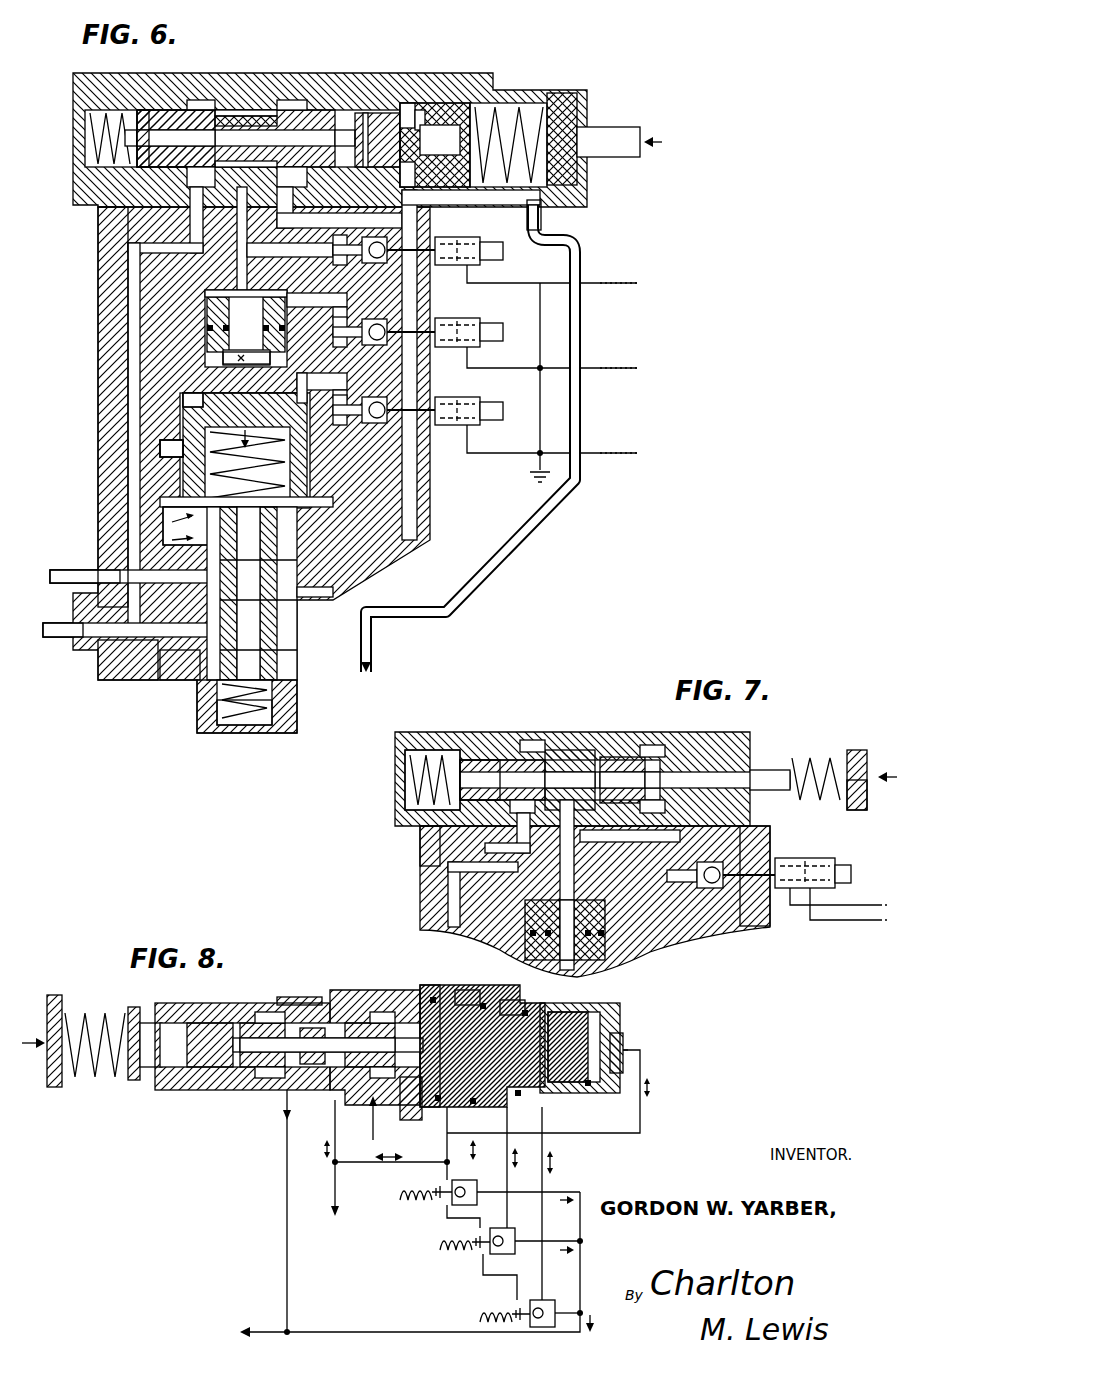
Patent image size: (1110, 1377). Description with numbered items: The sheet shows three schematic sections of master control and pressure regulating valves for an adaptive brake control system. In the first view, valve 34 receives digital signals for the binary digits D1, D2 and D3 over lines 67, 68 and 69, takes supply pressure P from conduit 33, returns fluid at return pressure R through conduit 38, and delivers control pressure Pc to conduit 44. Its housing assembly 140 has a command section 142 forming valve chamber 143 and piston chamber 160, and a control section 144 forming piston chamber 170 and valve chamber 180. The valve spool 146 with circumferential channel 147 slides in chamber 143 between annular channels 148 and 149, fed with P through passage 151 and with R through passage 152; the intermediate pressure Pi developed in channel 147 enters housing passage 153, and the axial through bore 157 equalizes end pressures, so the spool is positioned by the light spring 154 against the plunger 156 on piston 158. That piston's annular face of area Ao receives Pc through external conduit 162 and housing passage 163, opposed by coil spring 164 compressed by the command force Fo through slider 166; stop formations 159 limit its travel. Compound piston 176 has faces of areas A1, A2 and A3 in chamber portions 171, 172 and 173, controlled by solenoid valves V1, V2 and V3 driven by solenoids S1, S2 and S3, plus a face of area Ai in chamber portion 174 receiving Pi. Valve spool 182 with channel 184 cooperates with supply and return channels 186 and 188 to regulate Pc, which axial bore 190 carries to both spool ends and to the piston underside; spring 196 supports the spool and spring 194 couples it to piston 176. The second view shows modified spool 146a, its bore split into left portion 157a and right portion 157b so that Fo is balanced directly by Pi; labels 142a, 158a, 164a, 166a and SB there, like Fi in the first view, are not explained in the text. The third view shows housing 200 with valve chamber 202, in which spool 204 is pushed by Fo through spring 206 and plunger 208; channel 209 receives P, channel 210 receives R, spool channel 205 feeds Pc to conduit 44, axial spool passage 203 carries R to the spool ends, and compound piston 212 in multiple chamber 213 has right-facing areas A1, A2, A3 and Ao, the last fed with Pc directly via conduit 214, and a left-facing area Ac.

In FIG. 6, the master control and pressure regulating valve 34 is at (73, 88).
In FIG. 6, the housing assembly 140 is at (98, 268).
In FIG. 6, the command section 142 is at (290, 100).
In FIG. 6, the valve chamber 143 is at (280, 76).
In FIG. 7, the valve chamber 143 is at (572, 752).
In FIG. 6, the control section 144 is at (98, 294).
In FIG. 7, the control section 144 is at (430, 862).
In FIG. 6, the valve spool 146 is at (176, 112).
In FIG. 6, the circumferential channel 147 is at (222, 103).
In FIG. 7, the circumferential channel 147 is at (580, 756).
In FIG. 6, the annular channel 148 is at (232, 100).
In FIG. 7, the annular channel 148 is at (520, 745).
In FIG. 6, the annular channel 149 is at (345, 108).
In FIG. 7, the annular channel 149 is at (612, 755).
In FIG. 6, the passage 151 is at (128, 388).
In FIG. 7, the passage 151 is at (448, 908).
In FIG. 6, the passage 152 is at (418, 505).
In FIG. 7, the passage 152 is at (755, 915).
In FIG. 6, the housing passage 153 is at (203, 212).
In FIG. 7, the housing passage 153 is at (425, 843).
In FIG. 6, the light spring 154 is at (90, 137).
In FIG. 6, the plunger 156 is at (403, 100).
In FIG. 6, the axial through bore 157 is at (150, 115).
In FIG. 6, the piston 158 is at (520, 104).
In FIG. 6, the stop formations 159 is at (425, 105).
In FIG. 6, the piston chamber 160 is at (440, 100).
In FIG. 6, the external conduit 162 is at (488, 585).
In FIG. 6, the housing passage 163 is at (485, 207).
In FIG. 6, the coil spring 164 is at (555, 94).
In FIG. 6, the slider 166 is at (595, 128).
In FIG. 6, the piston chamber 170 is at (165, 538).
In FIG. 6, the chamber portion 171 is at (160, 448).
In FIG. 6, the chamber portion 172 is at (195, 398).
In FIG. 6, the chamber portion 173 is at (207, 300).
In FIG. 6, the chamber portion 174 is at (252, 373).
In FIG. 6, the compound piston 176 is at (183, 480).
In FIG. 7, the compound piston 176 is at (605, 960).
In FIG. 6, the valve chamber 180 is at (197, 722).
In FIG. 6, the valve spool 182 is at (290, 650).
In FIG. 6, the circumferential channel 184 is at (335, 592).
In FIG. 6, the supply channel 186 is at (180, 690).
In FIG. 6, the return channel 188 is at (128, 670).
In FIG. 6, the axial bore 190 is at (228, 722).
In FIG. 6, the spring 194 is at (276, 508).
In FIG. 6, the light spring 196 is at (262, 720).
In FIG. 6, the line 67 is at (612, 453).
In FIG. 6, the line 68 is at (610, 368).
In FIG. 6, the line 69 is at (620, 283).
In FIG. 6, the conduit 38 is at (52, 582).
In FIG. 8, the conduit 38 is at (287, 1268).
In FIG. 6, the conduit 33 is at (70, 650).
In FIG. 8, the conduit 33 is at (375, 1139).
In FIG. 6, the conduit 44 is at (360, 639).
In FIG. 8, the conduit 44 is at (335, 1178).
In FIG. 7, the valve housing 142a is at (710, 738).
In FIG. 7, the valve spool 146a is at (494, 760).
In FIG. 7, the left portion of axial bore 157a is at (483, 760).
In FIG. 7, the right portion of axial bore 157b is at (655, 752).
In FIG. 7, the spring 158a is at (770, 770).
In FIG. 7, the plate 164a is at (840, 760).
In FIG. 7, the input member 166a is at (852, 810).
In FIG. 8, the housing 200 is at (220, 1003).
In FIG. 8, the cylindrical valve chamber 202 is at (335, 1000).
In FIG. 8, the axial spool passage 203 is at (262, 1092).
In FIG. 8, the valve spool 204 is at (278, 1005).
In FIG. 8, the channel 205 is at (300, 1095).
In FIG. 8, the spring 206 is at (90, 1085).
In FIG. 8, the plunger 208 is at (152, 1075).
In FIG. 8, the valve channel 209 is at (375, 1013).
In FIG. 8, the valve channel 210 is at (300, 1010).
In FIG. 8, the compound piston 212 is at (410, 1120).
In FIG. 8, the multiple cylindrical chamber 213 is at (420, 1000).
In FIG. 8, the conduit 214 is at (640, 1132).
In FIG. 6, the solenoid S1 is at (480, 398).
In FIG. 8, the solenoid S1 is at (412, 1192).
In FIG. 6, the solenoid S2 is at (480, 318).
In FIG. 8, the solenoid S2 is at (446, 1244).
In FIG. 6, the solenoid S3 is at (469, 241).
In FIG. 8, the solenoid S3 is at (490, 1319).
In FIG. 7, the solenoid SB is at (831, 878).
In FIG. 6, the solenoid valve V1 is at (380, 420).
In FIG. 8, the solenoid valve V1 is at (513, 1195).
In FIG. 6, the solenoid valve V2 is at (380, 342).
In FIG. 8, the solenoid valve V2 is at (533, 1256).
In FIG. 6, the solenoid valve V3 is at (443, 266).
In FIG. 7, the solenoid valve V3 is at (712, 888).
In FIG. 8, the solenoid valve V3 is at (556, 1304).
In FIG. 6, the binary digit D1 is at (552, 434).
In FIG. 6, the binary digit D2 is at (552, 357).
In FIG. 6, the binary digit D3 is at (552, 273).
In FIG. 6, the piston face area A1 is at (165, 470).
In FIG. 8, the piston face area A1 is at (466, 998).
In FIG. 6, the piston face area A2 is at (185, 398).
In FIG. 8, the piston face area A2 is at (512, 1003).
In FIG. 6, the piston face area A3 is at (207, 304).
In FIG. 8, the piston face area A3 is at (545, 1012).
In FIG. 6, the piston face area Ai is at (223, 358).
In FIG. 6, the piston face area Ac is at (163, 520).
In FIG. 8, the piston face area Ac is at (425, 1000).
In FIG. 6, the piston face area Ao is at (425, 112).
In FIG. 7, the piston face area Ao is at (430, 748).
In FIG. 8, the piston face area Ao is at (623, 1035).
In FIG. 6, the intermediate pressure Pi is at (228, 272).
In FIG. 7, the intermediate pressure Pi is at (557, 885).
In FIG. 6, the control pressure Pc is at (445, 52).
In FIG. 8, the control pressure Pc is at (488, 1132).
In FIG. 6, the input force Fi is at (247, 464).
In FIG. 6, the command force Fo is at (666, 143).
In FIG. 7, the command force Fo is at (888, 788).
In FIG. 8, the command force Fo is at (31, 1052).
In FIG. 6, the supply pressure P is at (60, 622).
In FIG. 7, the supply pressure P is at (507, 842).
In FIG. 8, the supply pressure P is at (364, 1118).
In FIG. 6, the return pressure R is at (85, 589).
In FIG. 7, the return pressure R is at (630, 842).
In FIG. 8, the return pressure R is at (420, 1262).